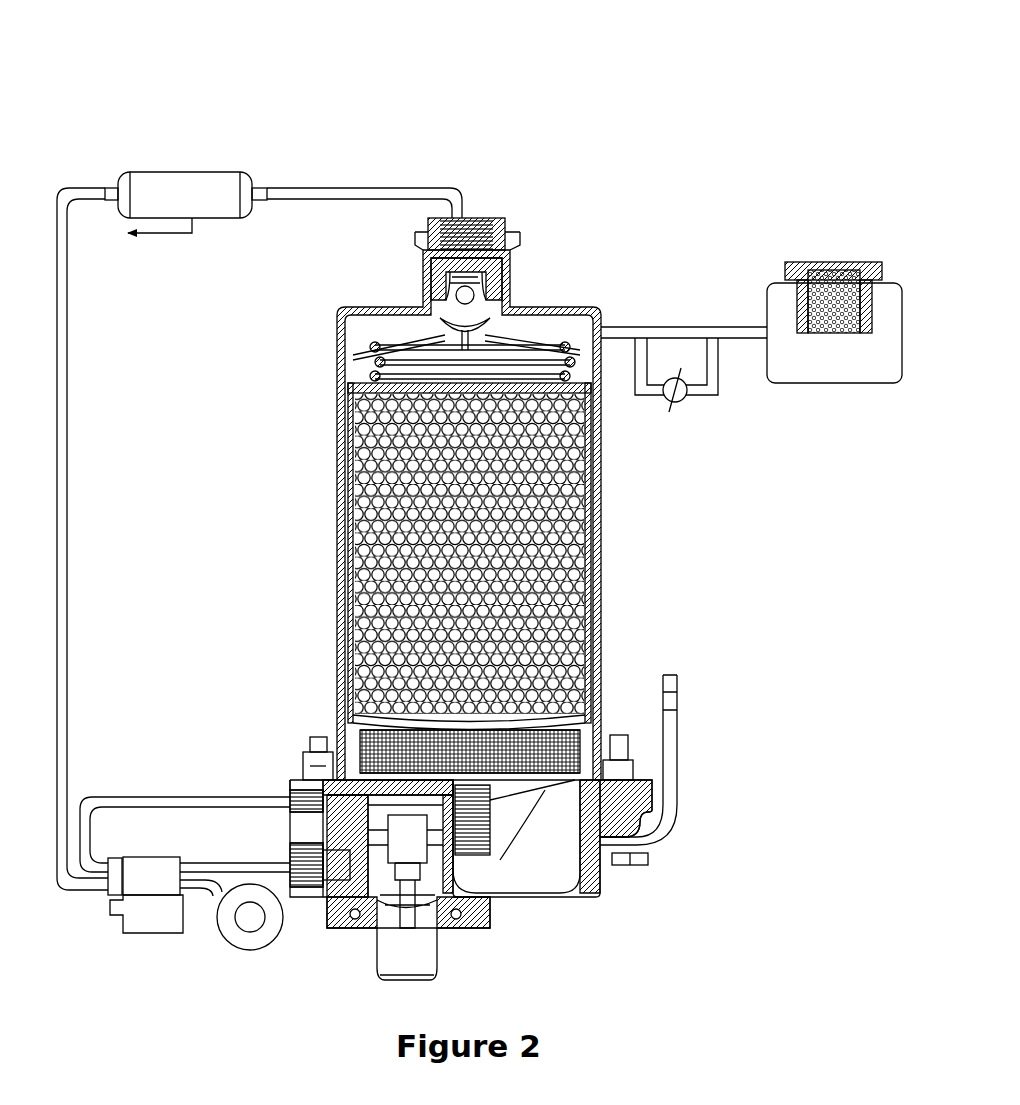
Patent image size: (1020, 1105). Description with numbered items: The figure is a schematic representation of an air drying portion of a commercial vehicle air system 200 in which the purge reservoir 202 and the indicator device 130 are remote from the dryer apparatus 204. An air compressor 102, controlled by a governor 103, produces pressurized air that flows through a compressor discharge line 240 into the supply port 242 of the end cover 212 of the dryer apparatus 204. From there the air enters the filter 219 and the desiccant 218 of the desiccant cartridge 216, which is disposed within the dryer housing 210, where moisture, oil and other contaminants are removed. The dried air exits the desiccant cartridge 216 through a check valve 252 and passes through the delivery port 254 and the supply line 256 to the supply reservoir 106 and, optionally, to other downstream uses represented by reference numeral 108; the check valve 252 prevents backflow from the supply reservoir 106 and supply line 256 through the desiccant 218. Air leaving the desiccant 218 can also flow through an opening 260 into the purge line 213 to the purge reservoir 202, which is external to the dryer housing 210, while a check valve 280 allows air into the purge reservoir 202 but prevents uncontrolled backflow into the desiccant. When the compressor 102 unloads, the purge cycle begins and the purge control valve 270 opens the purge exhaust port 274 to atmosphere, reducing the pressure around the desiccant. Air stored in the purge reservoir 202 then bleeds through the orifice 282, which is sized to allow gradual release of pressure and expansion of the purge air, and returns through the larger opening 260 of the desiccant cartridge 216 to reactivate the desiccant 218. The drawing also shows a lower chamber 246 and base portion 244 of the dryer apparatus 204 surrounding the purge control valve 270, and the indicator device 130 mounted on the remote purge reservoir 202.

The commercial vehicle air system 200 is at (360, 82).
The supply reservoir 106 is at (200, 185).
The downstream use 108 is at (136, 233).
The supply line 256 is at (355, 185).
The delivery port 254 is at (472, 220).
The check valve 252 is at (440, 290).
The opening 260 is at (560, 335).
The purge line 213 is at (620, 330).
The orifice 282 is at (680, 335).
The check valve 280 is at (686, 400).
The indicator device 130 is at (858, 240).
The purge reservoir 202 is at (810, 383).
The dryer apparatus 204 is at (312, 515).
The dryer housing 210 is at (605, 518).
The desiccant 218 is at (405, 566).
The desiccant cartridge 216 is at (345, 604).
The filter 219 is at (335, 750).
The end cover 212 is at (300, 790).
The supply port 242 is at (335, 860).
The compressor discharge line 240 is at (222, 866).
The air compressor 102 is at (138, 870).
The governor 103 is at (113, 860).
The purge chamber 246 is at (522, 862).
The base 244 is at (492, 878).
The purge control valve 270 is at (413, 843).
The purge exhaust port 274 is at (415, 955).